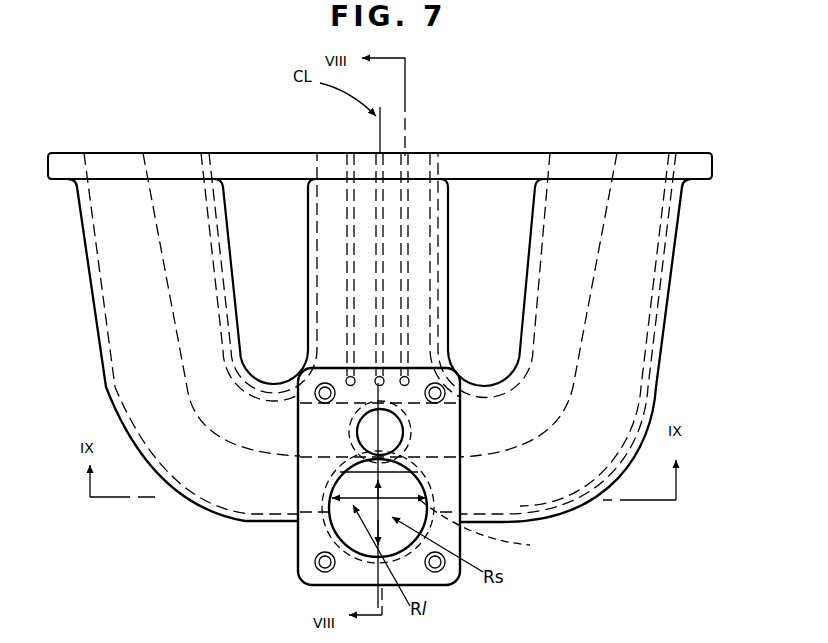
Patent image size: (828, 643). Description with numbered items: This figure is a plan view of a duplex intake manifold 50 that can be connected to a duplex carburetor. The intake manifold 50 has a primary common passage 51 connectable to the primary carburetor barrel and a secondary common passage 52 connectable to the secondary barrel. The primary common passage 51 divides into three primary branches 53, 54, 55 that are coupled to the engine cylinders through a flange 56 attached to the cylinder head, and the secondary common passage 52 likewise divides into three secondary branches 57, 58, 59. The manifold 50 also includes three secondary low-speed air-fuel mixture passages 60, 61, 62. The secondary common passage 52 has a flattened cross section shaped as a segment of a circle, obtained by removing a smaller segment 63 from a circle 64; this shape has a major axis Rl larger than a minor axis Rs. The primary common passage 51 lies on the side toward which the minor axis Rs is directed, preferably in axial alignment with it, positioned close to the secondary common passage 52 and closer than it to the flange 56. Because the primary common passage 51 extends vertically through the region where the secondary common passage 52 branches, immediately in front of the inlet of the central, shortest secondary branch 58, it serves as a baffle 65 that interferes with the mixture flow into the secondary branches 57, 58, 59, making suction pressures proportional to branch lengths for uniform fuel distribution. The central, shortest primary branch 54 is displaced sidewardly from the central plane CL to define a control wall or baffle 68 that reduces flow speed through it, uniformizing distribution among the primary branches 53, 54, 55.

The duplex intake manifold 50 is at (176, 499).
The primary common passage 51 is at (342, 461).
The secondary common passage 52 is at (333, 529).
The primary branch 53 is at (165, 200).
The primary branch 54 is at (425, 150).
The primary branch 55 is at (643, 195).
The flange 56 is at (506, 151).
The secondary branch 57 is at (120, 310).
The secondary branch 58 is at (320, 152).
The secondary branch 59 is at (635, 392).
The secondary low-speed air-fuel mixture passage 60 is at (348, 152).
The secondary low-speed air-fuel mixture passage 61 is at (384, 152).
The secondary low-speed air-fuel mixture passage 62 is at (410, 152).
The smaller segment 63 is at (420, 470).
The circle 64 is at (430, 490).
The baffle 65 is at (440, 520).
The control wall or baffle 68 is at (357, 397).